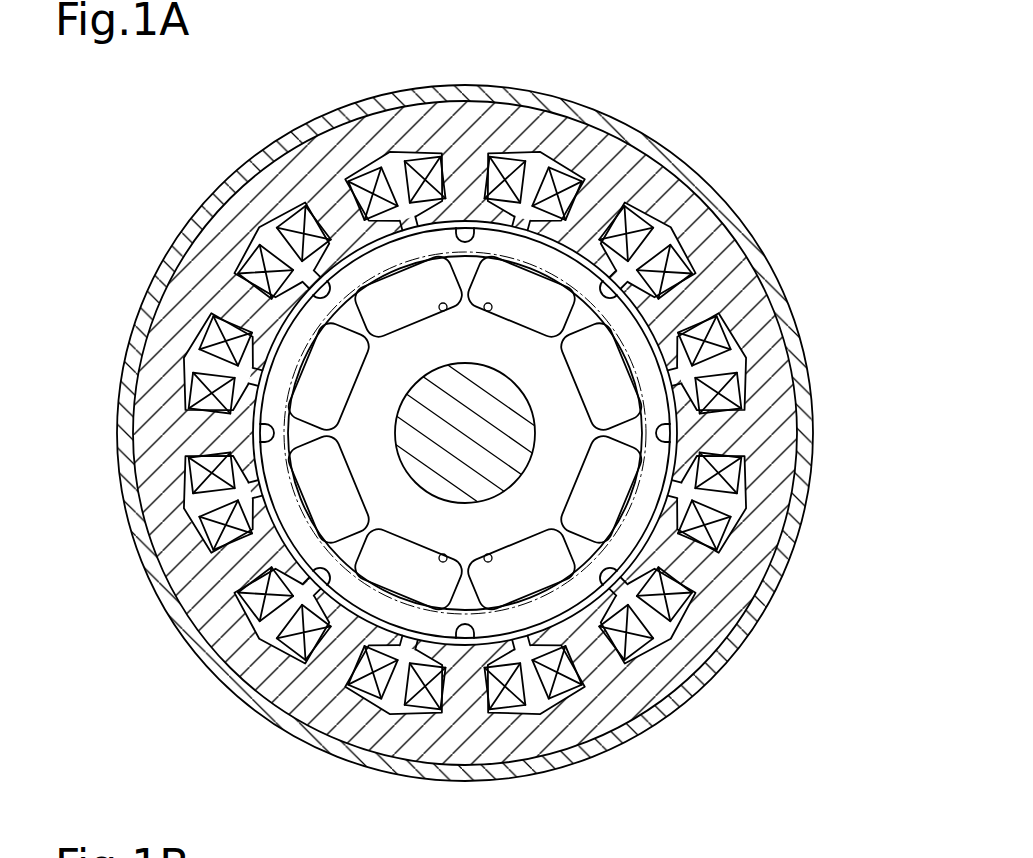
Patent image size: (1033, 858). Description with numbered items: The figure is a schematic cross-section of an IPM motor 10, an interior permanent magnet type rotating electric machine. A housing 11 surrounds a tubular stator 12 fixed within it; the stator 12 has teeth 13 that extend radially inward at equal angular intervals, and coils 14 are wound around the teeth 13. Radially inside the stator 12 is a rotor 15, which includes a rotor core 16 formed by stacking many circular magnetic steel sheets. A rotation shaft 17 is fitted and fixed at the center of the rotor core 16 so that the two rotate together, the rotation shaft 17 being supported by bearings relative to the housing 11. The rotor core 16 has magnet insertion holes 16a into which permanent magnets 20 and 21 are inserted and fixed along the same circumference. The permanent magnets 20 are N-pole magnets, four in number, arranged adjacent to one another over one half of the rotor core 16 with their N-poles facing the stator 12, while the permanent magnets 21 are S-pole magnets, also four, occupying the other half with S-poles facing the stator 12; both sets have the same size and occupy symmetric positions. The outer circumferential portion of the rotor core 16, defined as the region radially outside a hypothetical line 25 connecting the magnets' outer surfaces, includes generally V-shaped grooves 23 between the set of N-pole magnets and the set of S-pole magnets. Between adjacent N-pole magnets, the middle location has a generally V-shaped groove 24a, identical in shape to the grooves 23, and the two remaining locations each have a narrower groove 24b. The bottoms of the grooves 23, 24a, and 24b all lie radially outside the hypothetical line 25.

The IPM motor 10 is at (701, 114).
The housing 11 is at (770, 280).
The stator 12 is at (807, 403).
The teeth 13 is at (527, 205).
The coils 14 is at (376, 182).
The rotor 15 is at (266, 538).
The rotor core 16 is at (578, 267).
The magnet insertion holes 16a is at (485, 310).
The rotation shaft 17 is at (533, 433).
The permanent magnets 20 is at (398, 325).
The permanent magnets 21 is at (370, 496).
The V-shaped grooves 23 is at (677, 439).
The V-shaped groove 24a is at (460, 183).
The groove 24b is at (343, 380).
The hypothetical line 25 is at (332, 432).